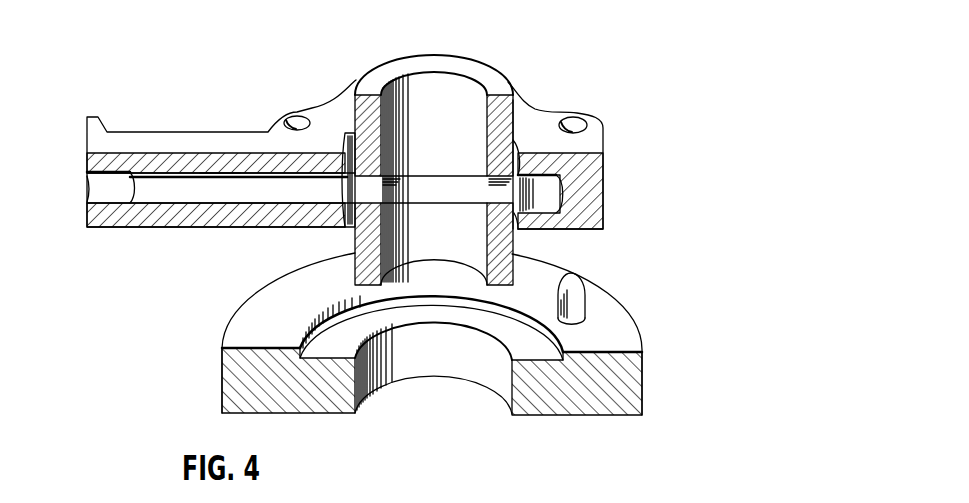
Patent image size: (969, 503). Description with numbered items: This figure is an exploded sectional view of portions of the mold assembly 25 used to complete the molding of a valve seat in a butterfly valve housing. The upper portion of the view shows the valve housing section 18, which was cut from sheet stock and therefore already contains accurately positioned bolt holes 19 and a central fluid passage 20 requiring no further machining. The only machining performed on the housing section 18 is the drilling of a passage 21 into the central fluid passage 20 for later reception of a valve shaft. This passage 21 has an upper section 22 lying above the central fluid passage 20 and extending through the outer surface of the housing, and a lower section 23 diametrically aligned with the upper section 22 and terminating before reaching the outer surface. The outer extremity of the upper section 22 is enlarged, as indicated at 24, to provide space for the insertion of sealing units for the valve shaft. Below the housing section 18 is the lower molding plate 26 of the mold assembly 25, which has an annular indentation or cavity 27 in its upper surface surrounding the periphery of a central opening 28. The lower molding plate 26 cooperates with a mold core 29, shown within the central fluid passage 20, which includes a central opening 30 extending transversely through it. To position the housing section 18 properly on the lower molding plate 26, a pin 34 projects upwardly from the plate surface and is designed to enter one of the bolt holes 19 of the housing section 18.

The valve housing section 18 is at (330, 110).
The bolt holes 19 is at (297, 117).
The central fluid passage 20 is at (517, 152).
The passage 21 is at (213, 186).
The upper section 22 is at (150, 186).
The lower section 23 is at (545, 197).
The enlarged outer extremity of upper section 24 is at (105, 186).
The mold assembly 25 is at (407, 331).
The lower molding plate 26 is at (237, 387).
The annular cavity 27 is at (327, 347).
The central opening 28 is at (422, 363).
The mold core 29 is at (421, 84).
The central opening 30 is at (373, 193).
The pin 34 is at (574, 281).